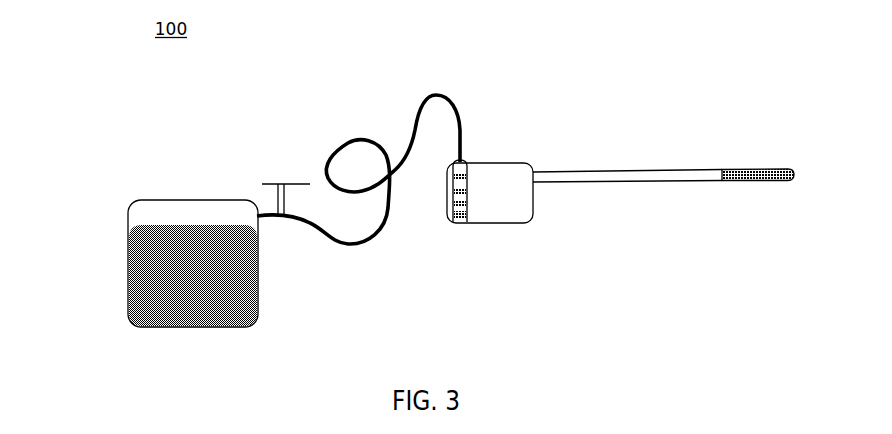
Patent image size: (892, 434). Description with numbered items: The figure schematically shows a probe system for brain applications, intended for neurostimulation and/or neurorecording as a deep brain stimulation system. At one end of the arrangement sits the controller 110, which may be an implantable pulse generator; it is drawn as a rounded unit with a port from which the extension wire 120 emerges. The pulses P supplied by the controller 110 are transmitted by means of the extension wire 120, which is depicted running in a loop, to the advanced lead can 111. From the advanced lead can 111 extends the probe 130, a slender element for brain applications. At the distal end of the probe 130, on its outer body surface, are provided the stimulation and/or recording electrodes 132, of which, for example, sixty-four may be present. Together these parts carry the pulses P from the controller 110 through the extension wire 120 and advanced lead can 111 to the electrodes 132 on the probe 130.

The controller 110 is at (153, 252).
The pulses P is at (278, 170).
The extension wire 120 is at (415, 122).
The advanced lead can 111 is at (505, 217).
The probe 130 is at (645, 152).
The electrodes 132 is at (763, 182).